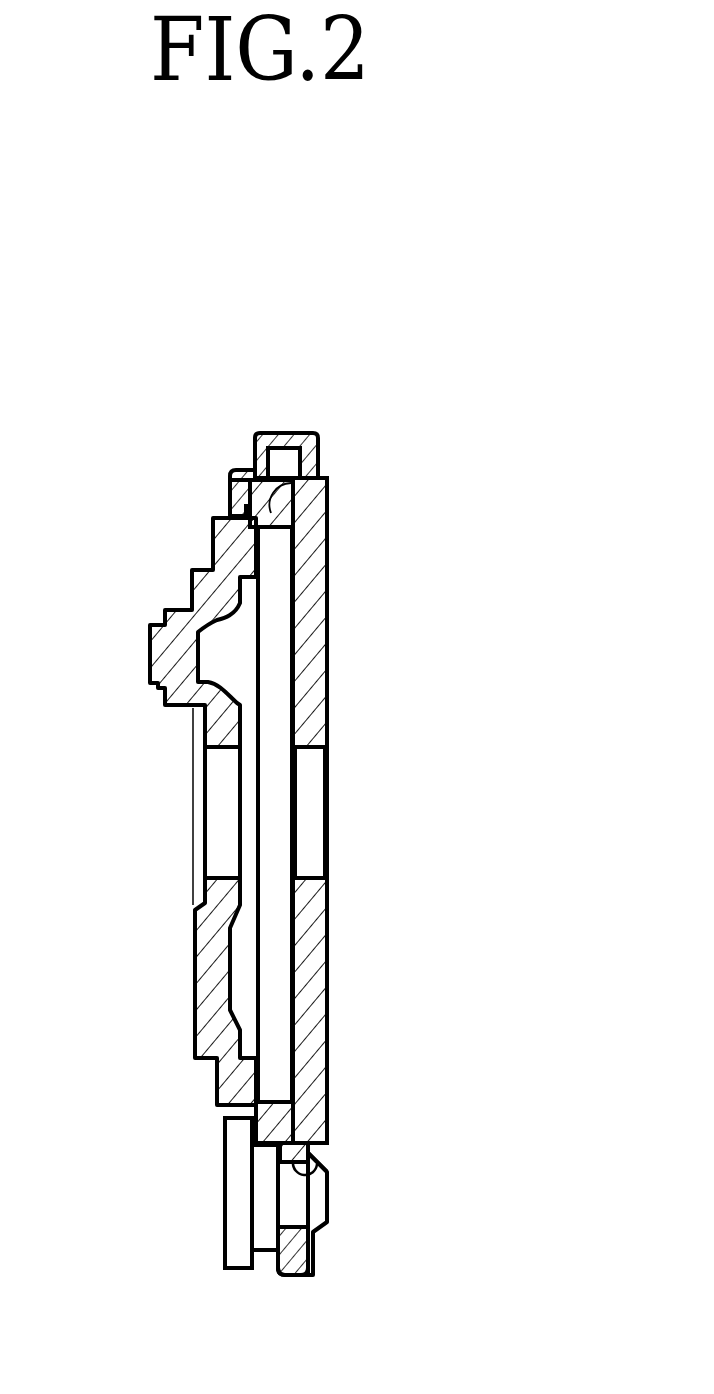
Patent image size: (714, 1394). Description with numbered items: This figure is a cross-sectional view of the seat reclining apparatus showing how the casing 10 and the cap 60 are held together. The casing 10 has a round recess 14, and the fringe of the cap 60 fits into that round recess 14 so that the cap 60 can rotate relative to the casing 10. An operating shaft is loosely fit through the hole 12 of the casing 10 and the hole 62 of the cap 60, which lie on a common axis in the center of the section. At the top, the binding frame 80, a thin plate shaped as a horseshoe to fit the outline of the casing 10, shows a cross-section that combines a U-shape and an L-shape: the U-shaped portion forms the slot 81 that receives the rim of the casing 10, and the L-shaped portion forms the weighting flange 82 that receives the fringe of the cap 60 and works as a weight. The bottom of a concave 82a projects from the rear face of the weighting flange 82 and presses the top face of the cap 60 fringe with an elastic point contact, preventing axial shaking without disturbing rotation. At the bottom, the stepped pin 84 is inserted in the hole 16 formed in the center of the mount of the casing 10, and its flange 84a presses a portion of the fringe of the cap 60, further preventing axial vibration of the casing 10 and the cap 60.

The casing 10 is at (340, 630).
The hole 12 is at (318, 768).
The round recess 14 is at (282, 518).
The hole 16 is at (322, 1158).
The cap 60 is at (200, 543).
The hole 62 is at (217, 752).
The binding frame 80 is at (257, 400).
The slot 81 is at (318, 457).
The weighting flange 82 is at (232, 477).
The concave 82a is at (232, 498).
The stepped pin 84 is at (281, 1196).
The flange 84a is at (225, 1197).